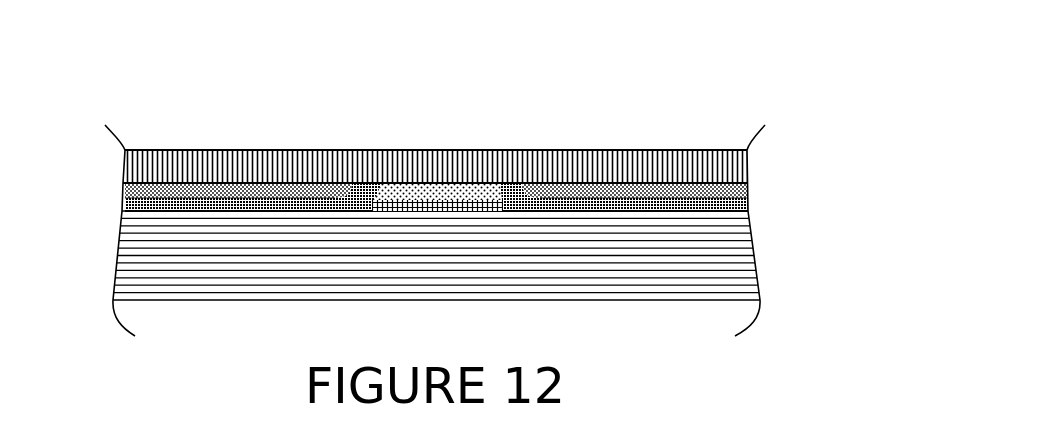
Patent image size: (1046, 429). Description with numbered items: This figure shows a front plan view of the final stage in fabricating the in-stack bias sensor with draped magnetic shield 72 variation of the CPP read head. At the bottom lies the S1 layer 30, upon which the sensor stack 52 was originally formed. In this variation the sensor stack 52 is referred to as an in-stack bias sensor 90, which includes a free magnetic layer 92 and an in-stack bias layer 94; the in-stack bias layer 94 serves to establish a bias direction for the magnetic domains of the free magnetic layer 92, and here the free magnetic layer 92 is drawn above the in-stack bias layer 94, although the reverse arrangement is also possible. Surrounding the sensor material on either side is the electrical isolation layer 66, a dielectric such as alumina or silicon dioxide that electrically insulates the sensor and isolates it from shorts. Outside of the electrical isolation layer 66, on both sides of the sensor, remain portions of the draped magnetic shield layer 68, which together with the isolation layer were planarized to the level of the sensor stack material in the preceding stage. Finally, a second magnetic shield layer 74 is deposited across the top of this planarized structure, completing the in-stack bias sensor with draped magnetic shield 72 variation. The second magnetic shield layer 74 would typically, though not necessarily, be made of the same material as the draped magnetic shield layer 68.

The in-stack bias sensor with draped magnetic shield 72 is at (202, 57).
The second magnetic shield layer 74 is at (435, 163).
The draped magnetic shield layer 68 is at (170, 188).
The electrical isolation layer 66 is at (378, 188).
The free magnetic layer 92 is at (401, 190).
The in-stack bias layer 94 is at (453, 196).
The sensor stack 52 is at (482, 162).
The in-stack bias sensor 90 is at (482, 166).
The S1 layer 30 is at (757, 255).